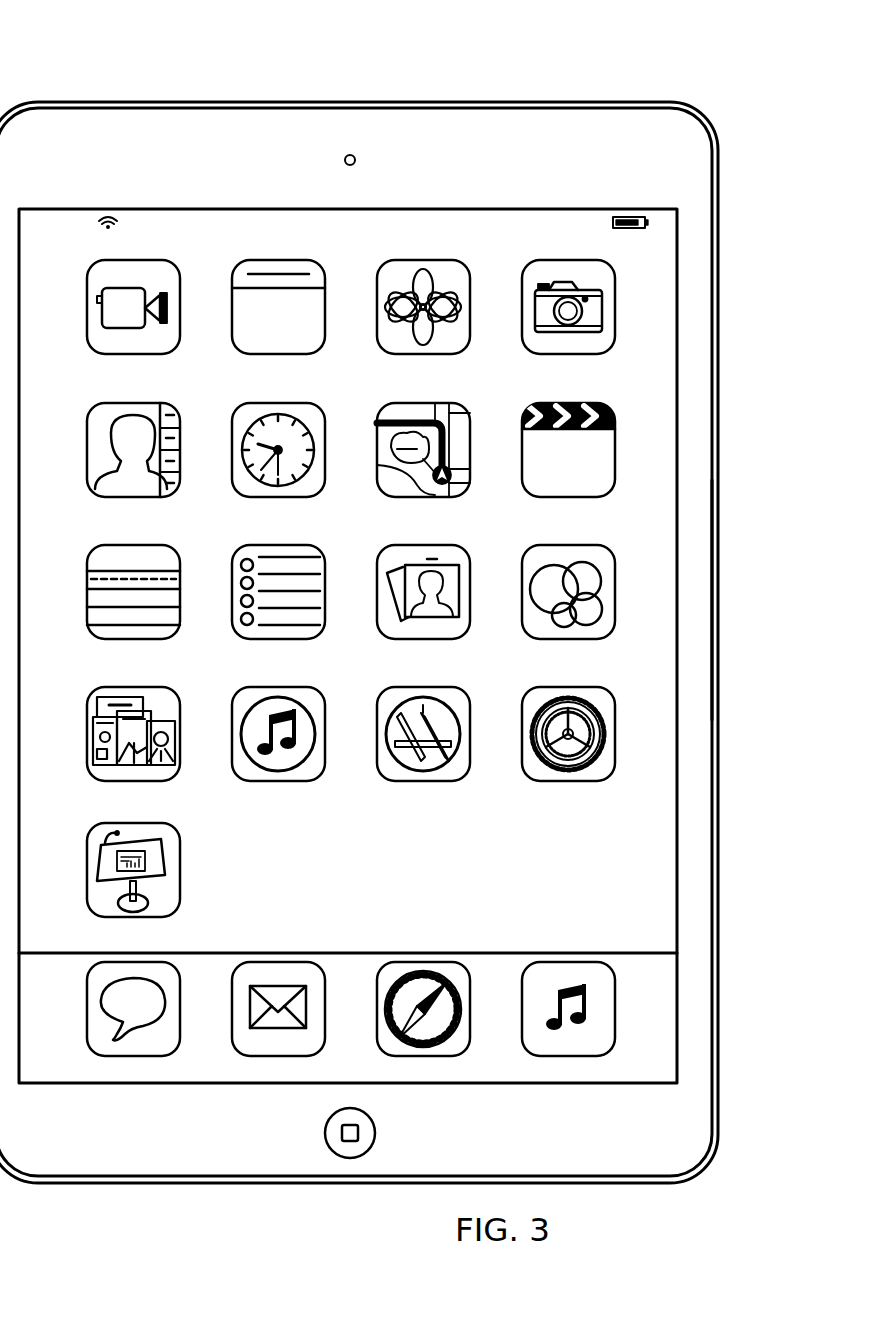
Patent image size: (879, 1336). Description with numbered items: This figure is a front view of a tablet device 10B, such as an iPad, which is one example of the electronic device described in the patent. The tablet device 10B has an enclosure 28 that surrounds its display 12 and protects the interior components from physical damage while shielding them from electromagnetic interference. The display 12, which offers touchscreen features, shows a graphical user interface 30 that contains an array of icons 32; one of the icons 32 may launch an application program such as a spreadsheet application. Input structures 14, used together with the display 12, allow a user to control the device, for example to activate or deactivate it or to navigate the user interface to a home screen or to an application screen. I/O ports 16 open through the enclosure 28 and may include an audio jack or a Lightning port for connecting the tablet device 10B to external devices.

The tablet device 10B is at (104, 34).
The display 12 is at (677, 855).
The input structures 14 is at (612, 102).
The I/O ports 16 is at (92, 102).
The enclosure 28 is at (718, 607).
The graphical user interface 30 is at (642, 810).
The icons 32 is at (182, 866).